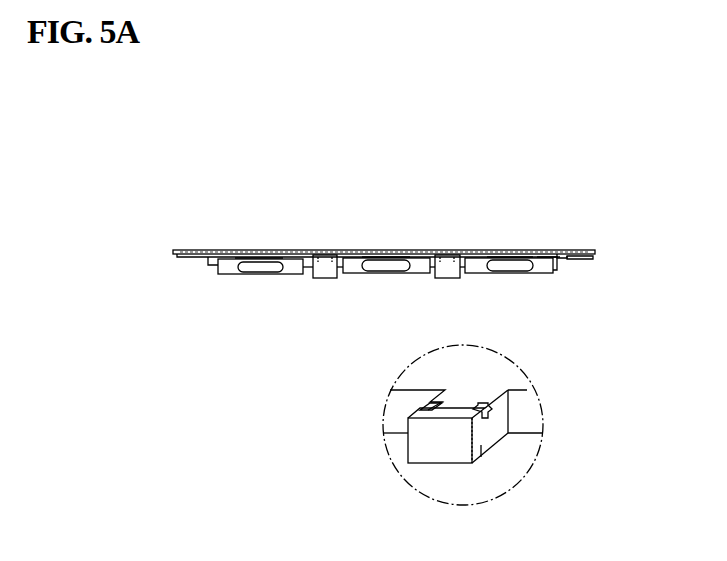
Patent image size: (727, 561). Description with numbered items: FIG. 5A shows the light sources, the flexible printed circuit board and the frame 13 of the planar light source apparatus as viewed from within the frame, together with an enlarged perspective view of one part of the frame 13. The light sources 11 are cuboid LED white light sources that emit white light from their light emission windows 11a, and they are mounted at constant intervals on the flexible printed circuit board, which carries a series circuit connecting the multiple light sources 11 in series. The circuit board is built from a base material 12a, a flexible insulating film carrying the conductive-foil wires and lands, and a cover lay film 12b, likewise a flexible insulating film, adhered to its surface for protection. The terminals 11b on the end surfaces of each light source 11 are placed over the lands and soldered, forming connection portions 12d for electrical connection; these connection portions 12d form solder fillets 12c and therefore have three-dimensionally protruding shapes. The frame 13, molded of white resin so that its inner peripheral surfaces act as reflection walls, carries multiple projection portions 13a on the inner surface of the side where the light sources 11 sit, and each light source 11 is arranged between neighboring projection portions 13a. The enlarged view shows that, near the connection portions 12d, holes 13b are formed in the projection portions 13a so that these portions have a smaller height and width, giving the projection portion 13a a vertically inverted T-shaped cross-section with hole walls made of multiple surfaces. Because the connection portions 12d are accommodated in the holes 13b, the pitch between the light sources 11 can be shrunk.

The light source 11 is at (356, 268).
The light emission window 11a is at (388, 268).
The terminal 11b is at (550, 257).
The base material 12a is at (595, 256).
The cover lay film 12b is at (572, 260).
The solder fillet 12c is at (563, 256).
The connection portion 12d is at (590, 216).
The frame 13 is at (513, 380).
The projection portion 13a is at (323, 279).
The hole 13b is at (333, 254).